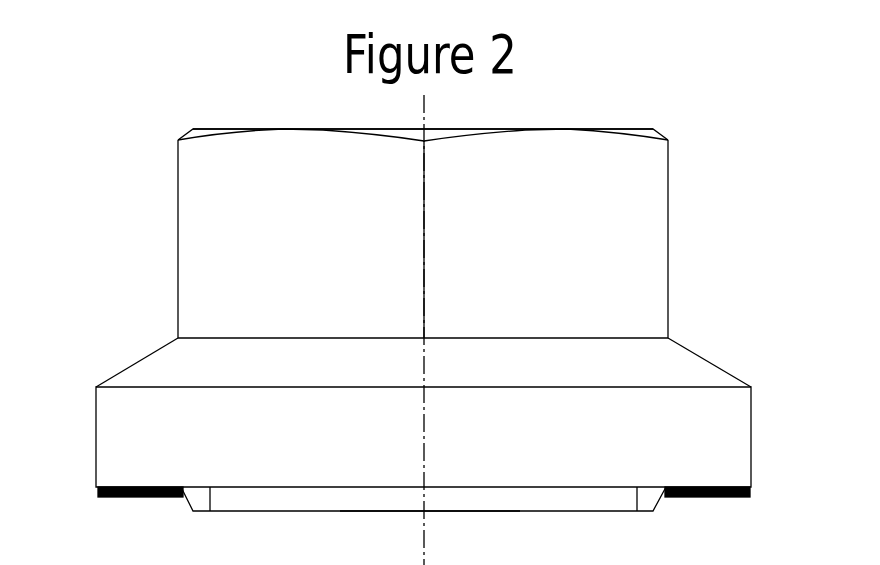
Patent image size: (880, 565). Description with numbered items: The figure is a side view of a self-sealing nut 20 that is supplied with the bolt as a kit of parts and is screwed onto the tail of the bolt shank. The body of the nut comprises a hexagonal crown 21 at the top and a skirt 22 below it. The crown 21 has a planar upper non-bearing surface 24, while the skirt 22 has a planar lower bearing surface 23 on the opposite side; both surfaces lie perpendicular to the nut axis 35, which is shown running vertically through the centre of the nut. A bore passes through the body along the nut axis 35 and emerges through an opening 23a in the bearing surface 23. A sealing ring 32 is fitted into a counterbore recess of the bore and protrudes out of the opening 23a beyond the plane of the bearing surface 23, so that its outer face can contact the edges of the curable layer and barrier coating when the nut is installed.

The self-sealing nut 20 is at (124, 233).
The hexagonal crown 21 is at (178, 277).
The skirt 22 is at (96, 426).
The bearing surface 23 is at (340, 488).
The opening 23a is at (430, 494).
The non-bearing surface 24 is at (240, 125).
The sealing ring 32 is at (528, 505).
The nut axis 35 is at (428, 98).